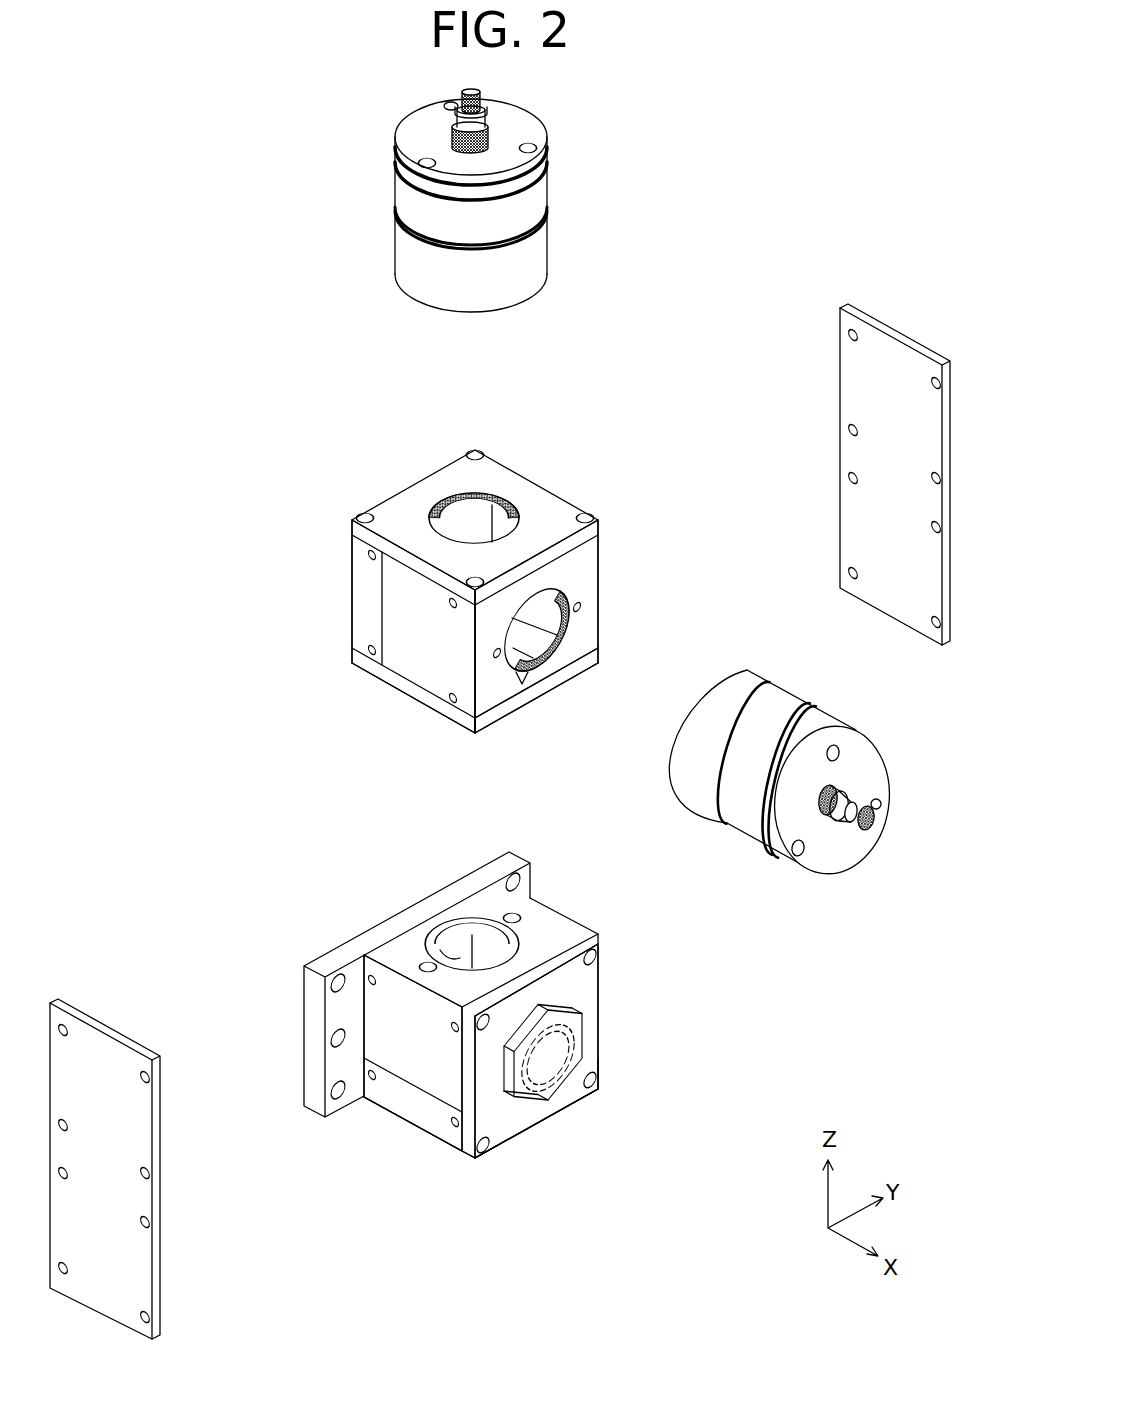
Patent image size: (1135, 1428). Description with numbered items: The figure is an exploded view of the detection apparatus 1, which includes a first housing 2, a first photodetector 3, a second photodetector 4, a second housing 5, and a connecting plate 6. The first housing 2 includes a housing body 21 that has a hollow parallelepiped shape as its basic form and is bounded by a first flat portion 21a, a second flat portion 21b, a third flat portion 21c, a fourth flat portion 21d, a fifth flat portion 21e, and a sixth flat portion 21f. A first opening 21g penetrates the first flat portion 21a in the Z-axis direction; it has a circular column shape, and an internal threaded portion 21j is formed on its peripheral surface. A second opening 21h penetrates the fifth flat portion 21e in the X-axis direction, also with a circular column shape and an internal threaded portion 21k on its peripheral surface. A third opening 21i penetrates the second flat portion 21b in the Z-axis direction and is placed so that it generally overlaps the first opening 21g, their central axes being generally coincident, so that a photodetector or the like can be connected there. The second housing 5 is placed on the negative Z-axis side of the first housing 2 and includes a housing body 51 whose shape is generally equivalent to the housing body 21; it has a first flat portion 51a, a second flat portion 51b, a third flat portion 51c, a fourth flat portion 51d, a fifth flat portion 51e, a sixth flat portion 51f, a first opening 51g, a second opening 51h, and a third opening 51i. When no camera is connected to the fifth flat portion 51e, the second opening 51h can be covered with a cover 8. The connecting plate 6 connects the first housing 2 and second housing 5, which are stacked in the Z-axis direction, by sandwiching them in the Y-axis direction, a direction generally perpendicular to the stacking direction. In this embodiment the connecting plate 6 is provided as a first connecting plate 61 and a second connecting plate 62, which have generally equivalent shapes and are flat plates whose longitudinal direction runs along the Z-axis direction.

The detection apparatus 1 is at (823, 145).
The first housing 2 is at (514, 586).
The housing body 21 is at (514, 586).
The first flat portion 21a is at (550, 502).
The second flat portion 21b is at (542, 700).
The third flat portion 21c is at (570, 618).
The fourth flat portion 21d is at (410, 668).
The fifth flat portion 21e is at (490, 697).
The sixth flat portion 21f is at (455, 525).
The first opening 21g is at (506, 483).
The second opening 21h is at (527, 682).
The third opening 21i is at (550, 660).
The internal threaded portion 21j is at (480, 492).
The internal threaded portion 21k is at (587, 583).
The first photodetector 3 is at (528, 203).
The second photodetector 4 is at (815, 718).
The second housing 5 is at (500, 1019).
The housing body 51 is at (481, 1019).
The first flat portion 51a is at (558, 945).
The second flat portion 51b is at (410, 1127).
The third flat portion 51c is at (537, 908).
The fourth flat portion 51d is at (390, 987).
The fifth flat portion 51e is at (503, 1117).
The sixth flat portion 51f is at (457, 943).
The first opening 51g is at (490, 905).
The second opening 51h is at (572, 1097).
The third opening 51i is at (433, 930).
The connecting plate 6 is at (500, 821).
The first connecting plate 61 is at (853, 390).
The second connecting plate 62 is at (108, 1052).
The cover 8 is at (580, 1050).